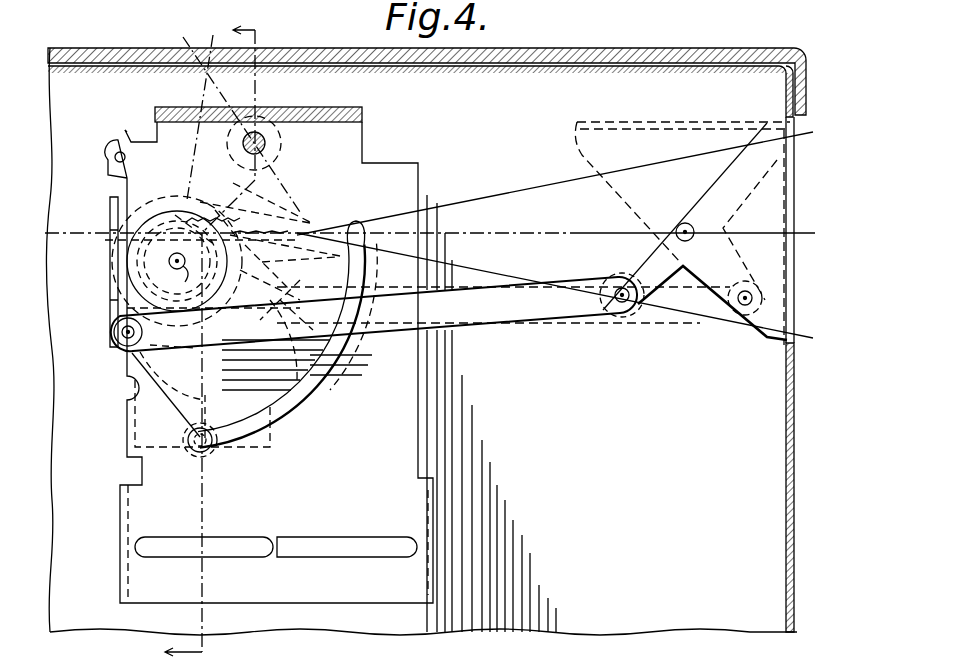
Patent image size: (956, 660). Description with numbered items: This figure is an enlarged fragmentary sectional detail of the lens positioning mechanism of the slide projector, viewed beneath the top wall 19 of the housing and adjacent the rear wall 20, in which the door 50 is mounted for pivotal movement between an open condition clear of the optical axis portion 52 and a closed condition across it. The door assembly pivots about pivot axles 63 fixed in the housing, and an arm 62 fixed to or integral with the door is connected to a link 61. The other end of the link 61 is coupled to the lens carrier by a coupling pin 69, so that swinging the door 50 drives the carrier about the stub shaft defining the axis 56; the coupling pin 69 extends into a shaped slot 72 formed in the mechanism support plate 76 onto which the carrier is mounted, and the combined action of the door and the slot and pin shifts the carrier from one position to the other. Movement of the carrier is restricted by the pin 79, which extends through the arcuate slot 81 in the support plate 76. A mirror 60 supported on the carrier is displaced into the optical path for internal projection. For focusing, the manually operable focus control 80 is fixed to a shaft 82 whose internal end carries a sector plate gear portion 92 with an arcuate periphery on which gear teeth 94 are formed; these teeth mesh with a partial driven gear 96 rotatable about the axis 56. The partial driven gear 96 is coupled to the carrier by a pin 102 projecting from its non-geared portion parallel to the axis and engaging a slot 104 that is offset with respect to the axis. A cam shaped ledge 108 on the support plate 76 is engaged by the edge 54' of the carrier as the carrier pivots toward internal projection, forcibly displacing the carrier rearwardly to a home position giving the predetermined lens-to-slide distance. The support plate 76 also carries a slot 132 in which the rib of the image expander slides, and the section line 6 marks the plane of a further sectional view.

The section line 6- 6 is at (192, 340).
The top wall 19 is at (662, 48).
The rear wall 20 is at (786, 422).
The door 50 is at (795, 192).
The optical axis portion 52 is at (602, 232).
The edge of the lens carrier 54' is at (249, 362).
The axis 56 is at (173, 275).
The mirror 60 is at (125, 201).
The link 61 is at (573, 318).
The arm 62 is at (648, 262).
The pivot axles 63 is at (688, 222).
The coupling pin 69 is at (118, 324).
The shaped slot 72 is at (192, 363).
The mechanism support plate 76 is at (413, 388).
The pin 79 is at (215, 490).
The focus control 80 is at (186, 30).
The arcuate slot 81 is at (283, 412).
The shaft 82 is at (243, 140).
The sector plate gear portion 92 is at (280, 201).
The gear teeth 94 is at (280, 252).
The partial driven gear 96 is at (142, 271).
The pin 102 is at (127, 250).
The slot 104 is at (112, 236).
The cam shaped ledge 108 is at (326, 405).
The slot 132 is at (292, 550).